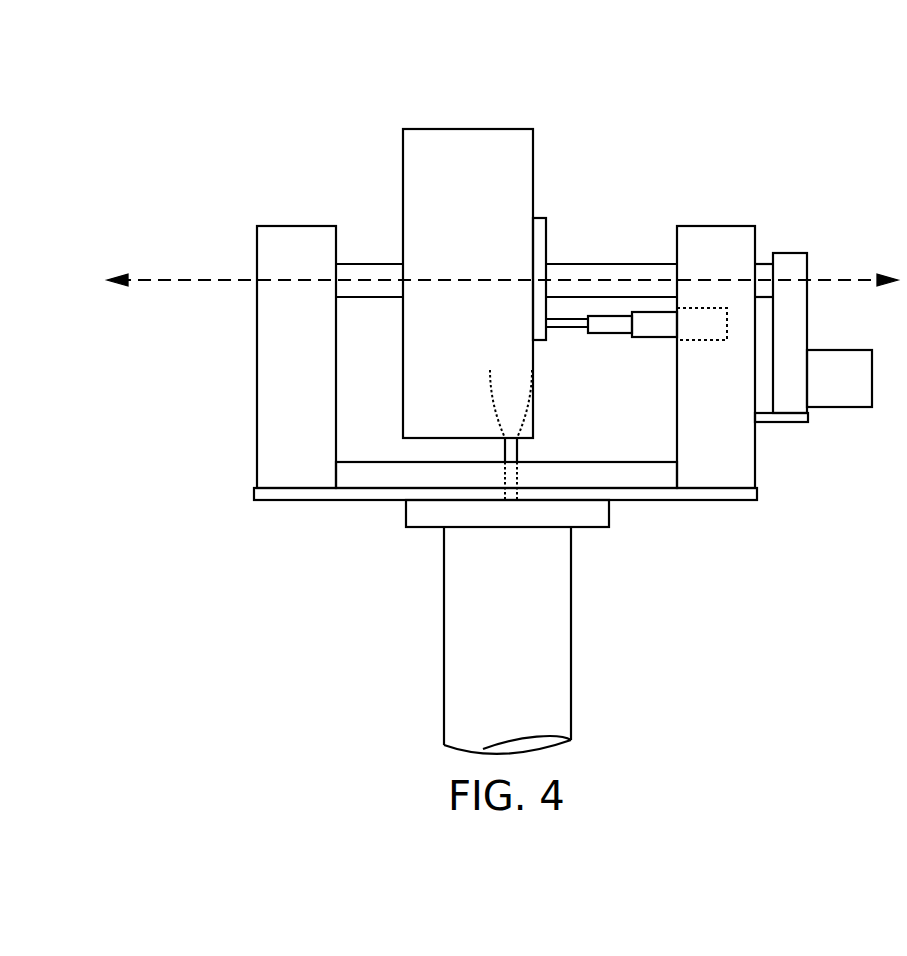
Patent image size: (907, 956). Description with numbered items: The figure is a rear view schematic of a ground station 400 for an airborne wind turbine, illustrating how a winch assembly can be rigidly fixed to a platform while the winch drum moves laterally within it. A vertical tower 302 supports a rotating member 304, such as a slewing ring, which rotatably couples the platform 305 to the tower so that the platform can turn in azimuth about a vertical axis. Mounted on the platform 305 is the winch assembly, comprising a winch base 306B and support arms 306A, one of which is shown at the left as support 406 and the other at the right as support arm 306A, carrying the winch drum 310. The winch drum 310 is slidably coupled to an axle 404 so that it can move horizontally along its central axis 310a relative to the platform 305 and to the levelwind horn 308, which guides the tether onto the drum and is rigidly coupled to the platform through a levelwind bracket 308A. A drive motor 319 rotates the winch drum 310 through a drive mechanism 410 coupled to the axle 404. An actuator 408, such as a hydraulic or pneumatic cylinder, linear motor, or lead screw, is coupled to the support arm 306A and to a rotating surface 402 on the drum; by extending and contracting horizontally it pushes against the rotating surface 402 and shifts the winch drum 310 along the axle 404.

The ground station 400 is at (630, 108).
The left support block 406 is at (275, 160).
The winch drum 310 is at (439, 128).
The rotating surface 402 is at (540, 217).
The axle 404 is at (597, 263).
The support arm 306A is at (700, 225).
The central axis 310a is at (833, 279).
The drive mechanism 410 is at (808, 334).
The drive motor 319 is at (841, 408).
The actuator 408 is at (608, 336).
The levelwind horn 308 is at (492, 403).
The levelwind bracket 308A is at (503, 447).
The winch base 306B is at (553, 461).
The platform 305 is at (758, 495).
The rotating member 304 is at (410, 530).
The vertical tower 302 is at (444, 692).